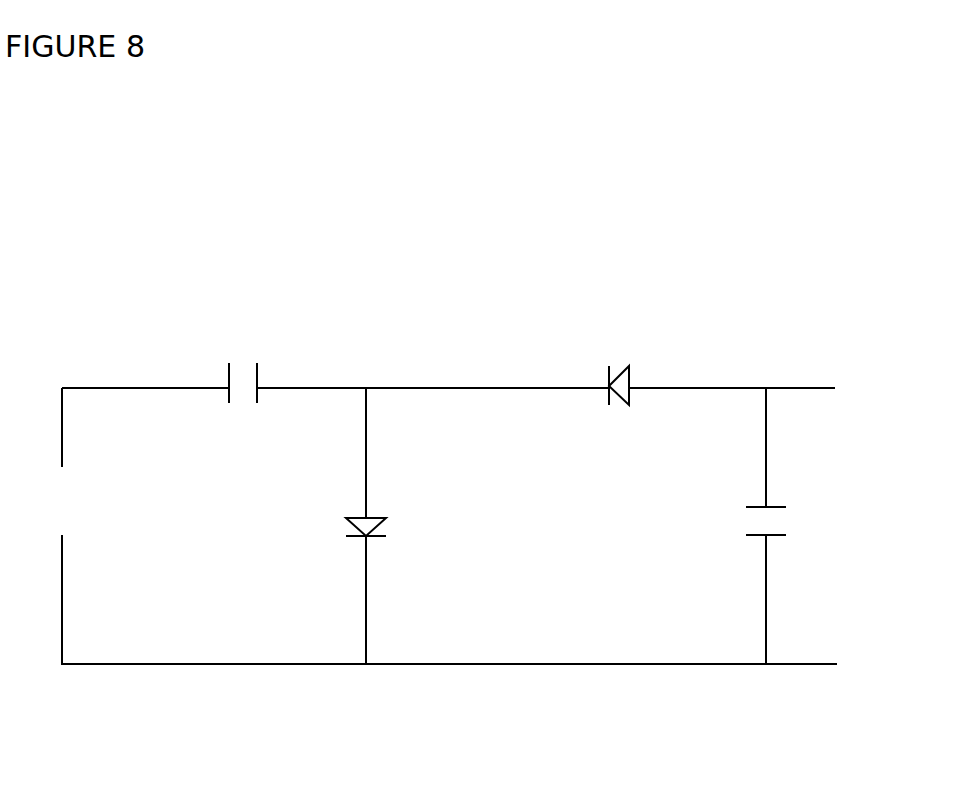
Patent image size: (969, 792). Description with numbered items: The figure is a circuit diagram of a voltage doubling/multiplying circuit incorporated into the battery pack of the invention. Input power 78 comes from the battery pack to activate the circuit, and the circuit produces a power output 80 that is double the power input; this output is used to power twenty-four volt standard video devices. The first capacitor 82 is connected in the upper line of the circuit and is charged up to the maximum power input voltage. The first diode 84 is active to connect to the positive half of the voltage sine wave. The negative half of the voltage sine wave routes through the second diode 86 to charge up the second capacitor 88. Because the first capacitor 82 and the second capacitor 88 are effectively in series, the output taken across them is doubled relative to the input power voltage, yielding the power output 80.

The input power 78 is at (125, 505).
The power output 80 is at (880, 390).
The capacitor C1 82 is at (228, 428).
The diode D1 84 is at (424, 515).
The diode D2 86 is at (633, 362).
The capacitor C2 88 is at (762, 527).